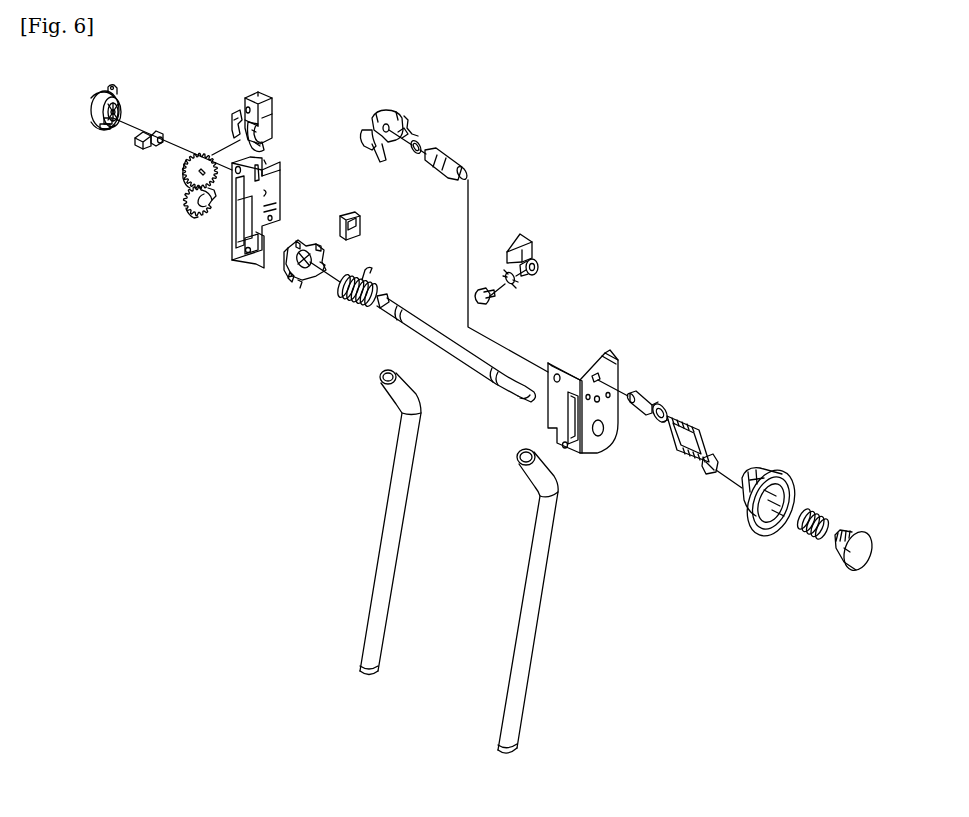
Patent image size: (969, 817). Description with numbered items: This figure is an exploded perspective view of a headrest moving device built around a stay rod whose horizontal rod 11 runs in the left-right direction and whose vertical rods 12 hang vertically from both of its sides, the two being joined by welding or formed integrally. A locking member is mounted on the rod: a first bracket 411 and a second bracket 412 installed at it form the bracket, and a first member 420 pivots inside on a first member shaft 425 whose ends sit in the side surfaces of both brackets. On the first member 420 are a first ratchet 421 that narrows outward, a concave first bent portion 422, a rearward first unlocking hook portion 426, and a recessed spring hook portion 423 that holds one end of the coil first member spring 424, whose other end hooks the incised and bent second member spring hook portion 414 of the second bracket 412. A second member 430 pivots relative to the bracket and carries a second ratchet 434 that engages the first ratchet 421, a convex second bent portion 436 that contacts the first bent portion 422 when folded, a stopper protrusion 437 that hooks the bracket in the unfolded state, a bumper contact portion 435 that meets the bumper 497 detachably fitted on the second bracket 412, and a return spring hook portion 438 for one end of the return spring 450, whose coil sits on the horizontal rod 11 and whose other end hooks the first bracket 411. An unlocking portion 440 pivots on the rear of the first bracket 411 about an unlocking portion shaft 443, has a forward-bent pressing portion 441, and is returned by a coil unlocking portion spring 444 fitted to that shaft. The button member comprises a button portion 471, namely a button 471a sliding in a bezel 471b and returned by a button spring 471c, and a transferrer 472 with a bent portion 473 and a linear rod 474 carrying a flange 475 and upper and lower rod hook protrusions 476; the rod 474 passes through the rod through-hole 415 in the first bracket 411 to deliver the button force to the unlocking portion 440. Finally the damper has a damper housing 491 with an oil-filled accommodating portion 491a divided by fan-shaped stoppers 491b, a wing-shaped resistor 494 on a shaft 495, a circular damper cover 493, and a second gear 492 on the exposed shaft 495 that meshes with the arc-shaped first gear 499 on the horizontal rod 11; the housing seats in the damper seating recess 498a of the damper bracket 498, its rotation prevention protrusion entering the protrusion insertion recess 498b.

The horizontal rod 11 is at (453, 347).
The vertical rod 12 is at (530, 620).
The first bracket 411 is at (598, 456).
The second bracket 412 is at (240, 258).
The second member spring hook portion 414 is at (258, 176).
The rod through-hole 415 is at (603, 368).
The first member 420 is at (379, 94).
The first ratchet 421 is at (372, 138).
The first bent portion 422 is at (395, 138).
The spring hook portion 423 is at (366, 140).
The first member spring 424 is at (420, 142).
The first member shaft 425 is at (458, 162).
The first unlocking hook portion 426 is at (388, 124).
The second member 430 is at (270, 278).
The second ratchet 434 is at (296, 244).
The bumper contact portion 435 is at (318, 245).
The second bent portion 436 is at (291, 277).
The stopper protrusion 437 is at (299, 283).
The return spring hook portion 438 is at (320, 262).
The unlocking portion 440 is at (560, 236).
The pressing portion 441 is at (539, 264).
The unlocking portion shaft 443 is at (490, 298).
The unlocking portion spring 444 is at (518, 284).
The return spring 450 is at (352, 300).
The button portion 471 is at (864, 622).
The button 471a is at (847, 562).
The bezel 471b is at (755, 528).
The button spring 471c is at (812, 540).
The transferrer 472 is at (823, 330).
The bent portion 473 is at (714, 462).
The rod 474 is at (666, 408).
The flange 475 is at (692, 445).
The rod hook protrusion 476 is at (645, 394).
The damper housing 491 is at (104, 114).
The accommodating portion 491a is at (105, 128).
The stopper 491b is at (118, 112).
The second gear 492 is at (186, 203).
The damper cover 493 is at (184, 175).
The resistor 494 is at (140, 144).
The shaft 495 is at (156, 148).
The bumper 497 is at (362, 232).
The damper bracket 498 is at (268, 110).
The damper seating recess 498a is at (264, 130).
The protrusion insertion recess 498b is at (232, 128).
The first gear 499 is at (192, 214).